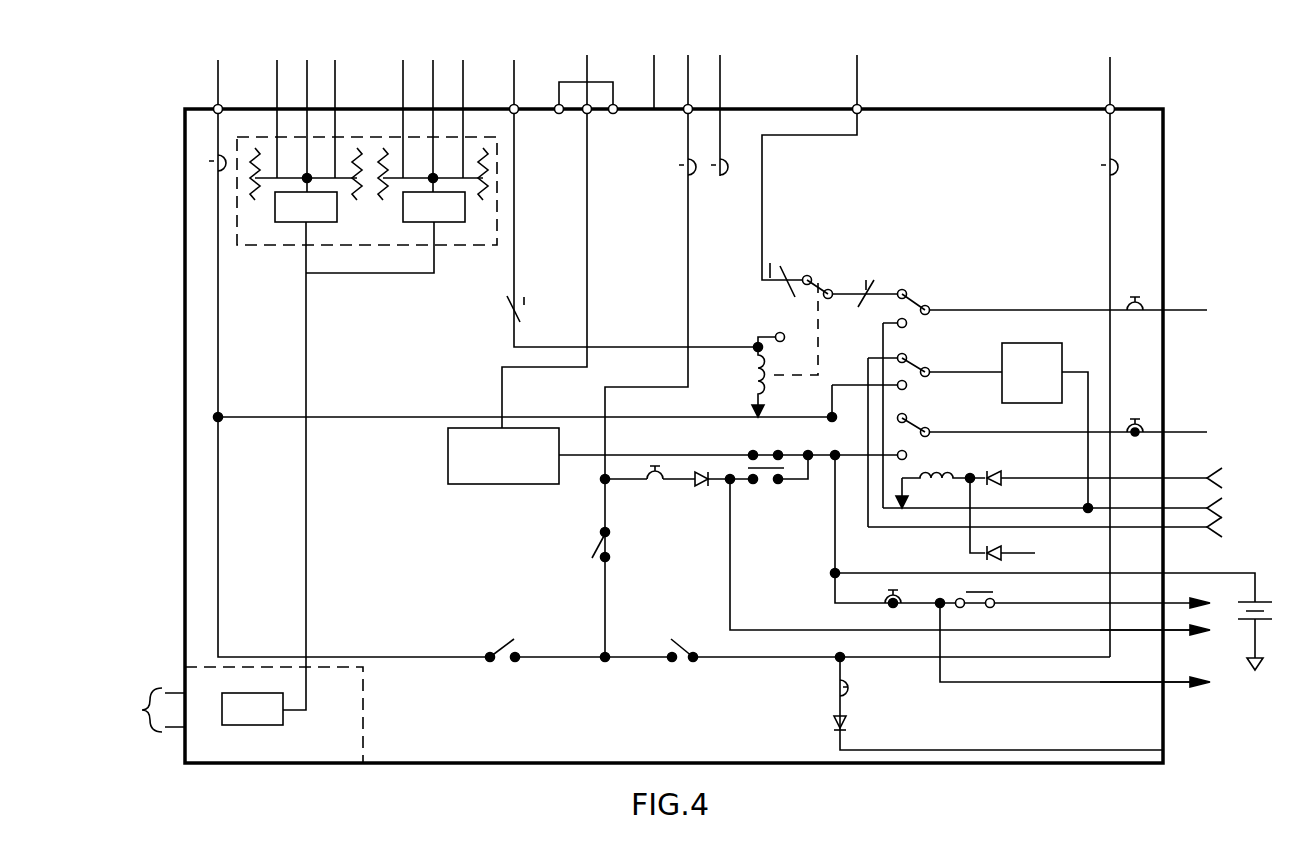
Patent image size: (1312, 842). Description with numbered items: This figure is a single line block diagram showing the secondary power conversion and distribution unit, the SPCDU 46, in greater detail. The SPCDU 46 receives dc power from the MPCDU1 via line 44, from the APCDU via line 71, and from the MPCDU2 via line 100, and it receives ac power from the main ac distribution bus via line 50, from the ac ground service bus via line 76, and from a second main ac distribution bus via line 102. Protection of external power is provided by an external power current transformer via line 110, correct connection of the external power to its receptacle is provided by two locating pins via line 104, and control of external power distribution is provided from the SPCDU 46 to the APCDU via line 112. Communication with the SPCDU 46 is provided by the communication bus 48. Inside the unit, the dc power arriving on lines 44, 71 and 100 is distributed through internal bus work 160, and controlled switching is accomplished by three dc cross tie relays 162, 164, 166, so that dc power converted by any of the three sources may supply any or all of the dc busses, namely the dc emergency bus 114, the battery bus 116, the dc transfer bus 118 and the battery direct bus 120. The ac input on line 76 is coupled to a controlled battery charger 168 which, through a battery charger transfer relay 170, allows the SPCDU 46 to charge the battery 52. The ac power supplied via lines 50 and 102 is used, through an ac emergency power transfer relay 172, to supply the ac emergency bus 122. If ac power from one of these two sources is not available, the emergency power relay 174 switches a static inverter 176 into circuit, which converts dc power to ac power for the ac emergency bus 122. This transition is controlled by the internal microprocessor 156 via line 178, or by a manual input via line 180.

The line 44 is at (218, 77).
The SPCDU 46 is at (185, 174).
The communication bus 48 is at (243, 58).
The line 50 is at (513, 63).
The line 76 is at (587, 68).
The line 110 is at (653, 68).
The line 71 is at (688, 65).
The line 112 is at (725, 72).
The line 102 is at (858, 74).
The line 100 is at (1110, 72).
The ac emergency power transfer relay 172 is at (781, 258).
The emergency power relay 174 is at (912, 258).
The static inverter 176 is at (1037, 343).
The ac emergency bus 122 is at (1187, 310).
The dc emergency bus 114 is at (1192, 433).
The line 180 is at (1015, 478).
The line 178 is at (967, 545).
The controlled battery charger 168 is at (448, 443).
The battery charger transfer relay 170 is at (762, 505).
The dc cross tie relay 164 is at (607, 549).
The internal bus work 160 is at (377, 657).
The dc cross tie relay 162 is at (495, 648).
The dc cross tie relay 166 is at (680, 647).
The battery bus 116 is at (1180, 598).
The dc transfer bus 118 is at (1172, 633).
The battery direct bus 120 is at (1176, 686).
The battery 52 is at (1268, 617).
The line 104 is at (140, 706).
The microprocessor 156 is at (273, 727).